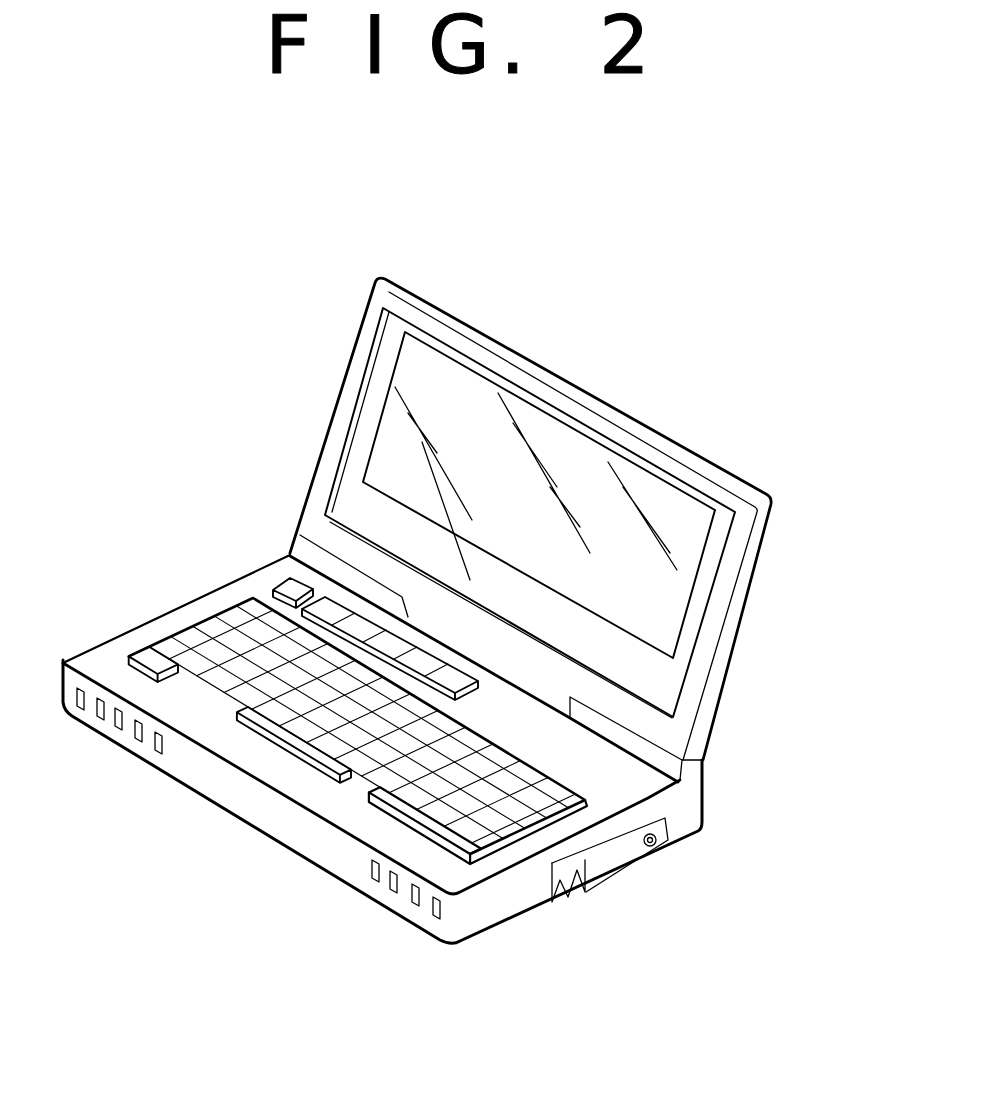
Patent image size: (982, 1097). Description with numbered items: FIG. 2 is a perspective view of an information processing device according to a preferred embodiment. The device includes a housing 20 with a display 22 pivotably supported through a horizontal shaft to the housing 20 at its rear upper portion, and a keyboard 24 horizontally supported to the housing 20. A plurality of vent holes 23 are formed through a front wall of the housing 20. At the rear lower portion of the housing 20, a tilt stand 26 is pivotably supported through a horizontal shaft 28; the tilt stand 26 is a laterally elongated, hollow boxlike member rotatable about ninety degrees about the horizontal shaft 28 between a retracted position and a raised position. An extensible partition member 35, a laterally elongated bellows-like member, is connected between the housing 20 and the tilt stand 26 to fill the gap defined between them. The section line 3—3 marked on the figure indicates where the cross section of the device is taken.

The housing 20 is at (285, 858).
The display 22 is at (395, 441).
The vent holes 23 is at (120, 726).
The keyboard 24 is at (215, 633).
The tilt stand 26 is at (610, 862).
The horizontal shaft 28 is at (659, 843).
The extensible partition member 35 is at (575, 888).
The section line 3— 3 is at (225, 850).